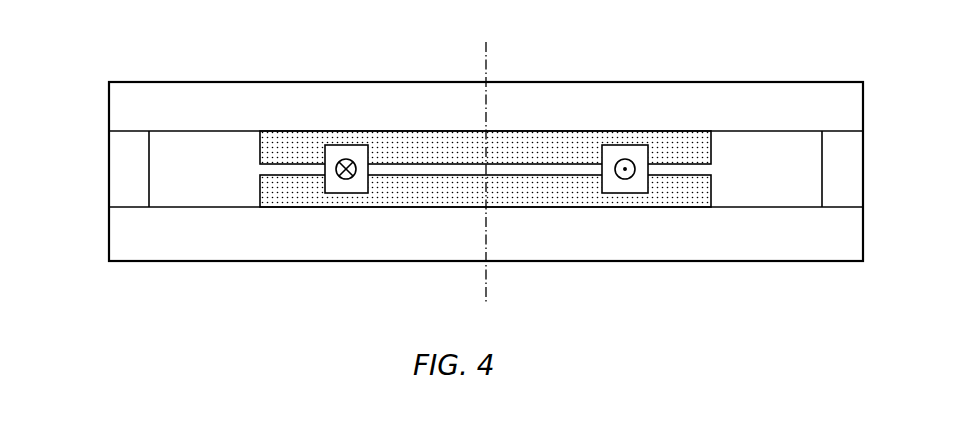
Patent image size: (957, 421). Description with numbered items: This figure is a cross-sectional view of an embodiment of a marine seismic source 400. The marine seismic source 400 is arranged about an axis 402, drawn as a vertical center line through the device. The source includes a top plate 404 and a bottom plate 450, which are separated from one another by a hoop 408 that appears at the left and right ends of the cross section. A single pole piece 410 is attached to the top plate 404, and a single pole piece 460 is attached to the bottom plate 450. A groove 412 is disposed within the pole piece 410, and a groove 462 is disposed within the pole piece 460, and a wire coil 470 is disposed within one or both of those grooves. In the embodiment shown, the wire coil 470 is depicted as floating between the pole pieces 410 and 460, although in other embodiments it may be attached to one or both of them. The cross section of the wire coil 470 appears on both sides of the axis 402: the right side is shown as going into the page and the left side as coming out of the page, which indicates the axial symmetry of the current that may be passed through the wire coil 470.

The marine seismic source 400 is at (740, 48).
The axis 402 is at (485, 53).
The top plate 404 is at (486, 114).
The hoop 408 is at (115, 159).
The pole piece 410 is at (260, 146).
The groove 412 is at (368, 152).
The bottom plate 450 is at (486, 224).
The pole piece 460 is at (260, 180).
The groove 462 is at (368, 183).
The wire coil 470 is at (340, 178).